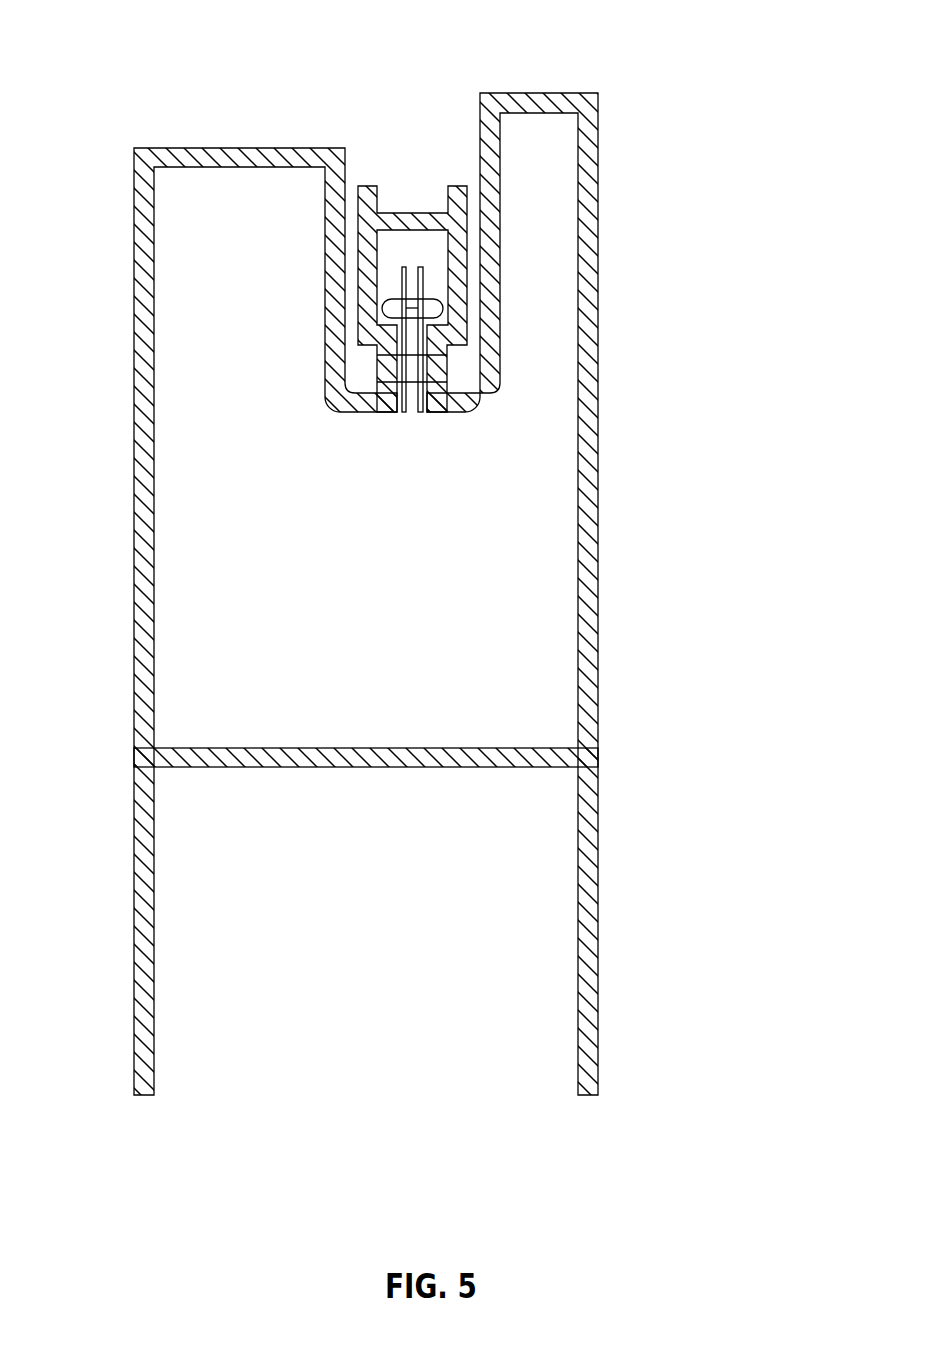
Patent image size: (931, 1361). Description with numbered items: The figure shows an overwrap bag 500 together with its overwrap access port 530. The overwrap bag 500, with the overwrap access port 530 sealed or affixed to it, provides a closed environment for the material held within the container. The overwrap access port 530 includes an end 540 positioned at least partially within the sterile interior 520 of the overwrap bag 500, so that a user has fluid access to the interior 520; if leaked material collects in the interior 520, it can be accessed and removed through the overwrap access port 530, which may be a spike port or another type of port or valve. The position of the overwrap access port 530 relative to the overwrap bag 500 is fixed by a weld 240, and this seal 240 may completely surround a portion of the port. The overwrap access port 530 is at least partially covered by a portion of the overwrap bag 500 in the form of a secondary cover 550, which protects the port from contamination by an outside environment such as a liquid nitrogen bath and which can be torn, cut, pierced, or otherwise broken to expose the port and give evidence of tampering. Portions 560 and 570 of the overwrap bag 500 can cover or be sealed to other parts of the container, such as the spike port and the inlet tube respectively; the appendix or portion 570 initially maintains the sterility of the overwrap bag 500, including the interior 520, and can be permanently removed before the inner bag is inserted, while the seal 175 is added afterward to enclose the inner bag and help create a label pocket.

The overwrap bag 500 is at (694, 437).
The portion of the overwrap bag 560 is at (244, 134).
The appendix or portion 570 is at (531, 80).
The secondary cover 550 is at (385, 200).
The overwrap access port 530 is at (412, 253).
The end 540 is at (412, 409).
The weld 240 is at (399, 399).
The sterile interior 520 is at (387, 682).
The seal 175 is at (455, 786).